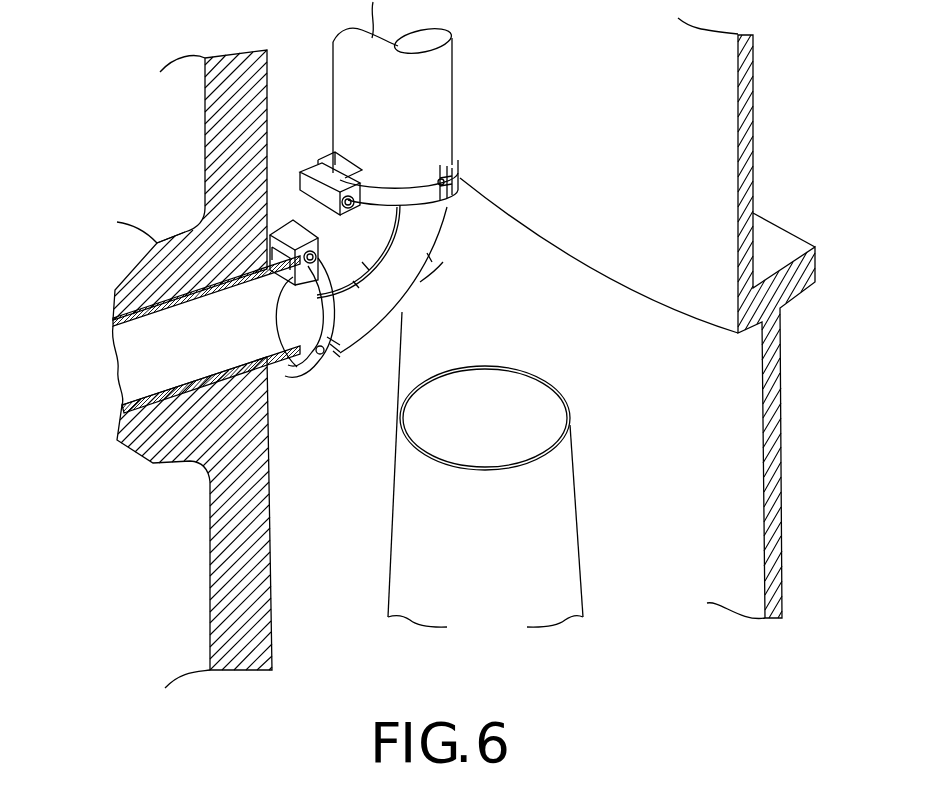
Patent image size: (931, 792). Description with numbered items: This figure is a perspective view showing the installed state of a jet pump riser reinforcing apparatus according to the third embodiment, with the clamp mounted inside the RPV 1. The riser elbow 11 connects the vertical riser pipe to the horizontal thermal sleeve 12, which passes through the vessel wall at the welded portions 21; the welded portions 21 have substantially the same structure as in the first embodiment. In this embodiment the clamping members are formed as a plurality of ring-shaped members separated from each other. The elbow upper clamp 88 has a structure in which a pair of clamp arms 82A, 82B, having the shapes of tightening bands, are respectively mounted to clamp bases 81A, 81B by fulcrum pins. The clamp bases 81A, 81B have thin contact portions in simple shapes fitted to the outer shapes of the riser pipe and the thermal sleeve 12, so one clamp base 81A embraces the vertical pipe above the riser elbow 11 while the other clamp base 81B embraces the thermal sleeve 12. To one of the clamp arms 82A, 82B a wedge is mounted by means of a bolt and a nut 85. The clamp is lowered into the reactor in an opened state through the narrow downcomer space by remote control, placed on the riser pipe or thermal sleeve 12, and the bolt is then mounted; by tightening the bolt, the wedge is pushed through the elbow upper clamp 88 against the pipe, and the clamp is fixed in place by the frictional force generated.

The RPV 1 is at (243, 62).
The riser elbow 11 is at (428, 260).
The thermal sleeve 12 is at (128, 362).
The welded portions 21 is at (177, 252).
The clamp base 81A is at (406, 155).
The clamp base 81B is at (326, 333).
The clamp arm 82A is at (408, 203).
The clamp arm 82B is at (335, 313).
The nut 85 is at (365, 168).
The elbow upper clamp 88 is at (413, 283).